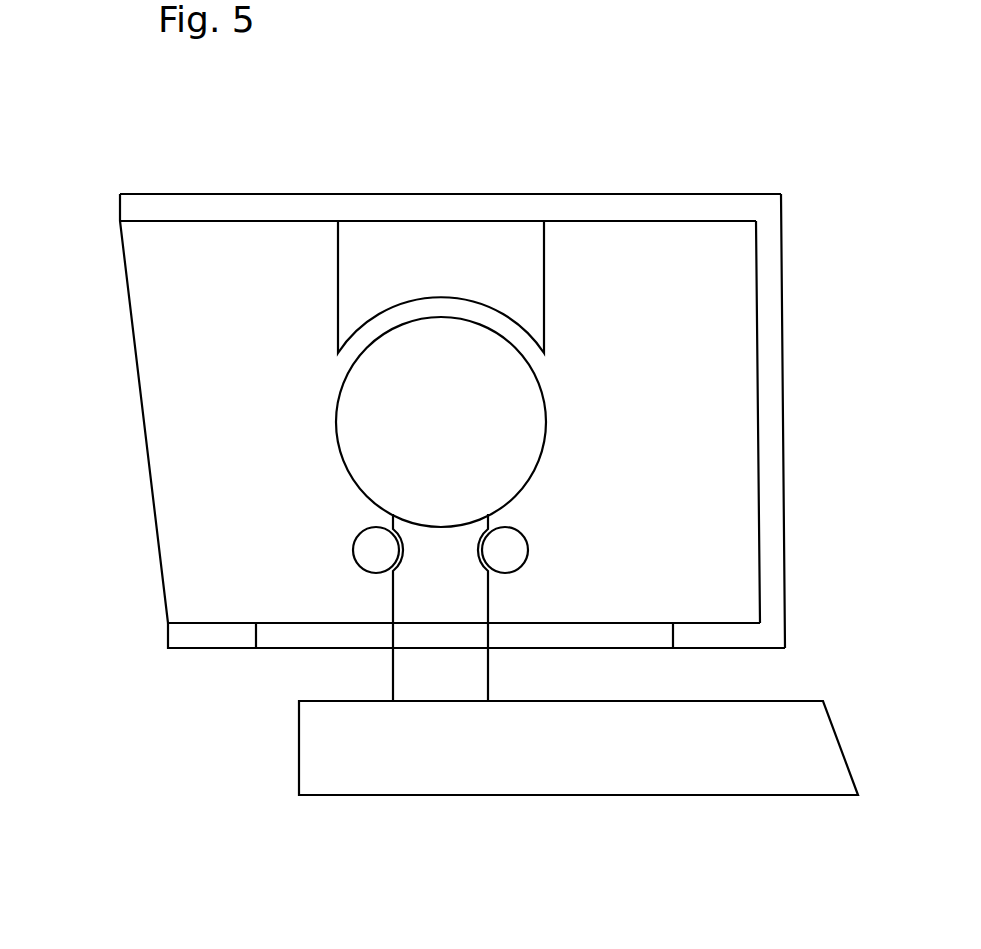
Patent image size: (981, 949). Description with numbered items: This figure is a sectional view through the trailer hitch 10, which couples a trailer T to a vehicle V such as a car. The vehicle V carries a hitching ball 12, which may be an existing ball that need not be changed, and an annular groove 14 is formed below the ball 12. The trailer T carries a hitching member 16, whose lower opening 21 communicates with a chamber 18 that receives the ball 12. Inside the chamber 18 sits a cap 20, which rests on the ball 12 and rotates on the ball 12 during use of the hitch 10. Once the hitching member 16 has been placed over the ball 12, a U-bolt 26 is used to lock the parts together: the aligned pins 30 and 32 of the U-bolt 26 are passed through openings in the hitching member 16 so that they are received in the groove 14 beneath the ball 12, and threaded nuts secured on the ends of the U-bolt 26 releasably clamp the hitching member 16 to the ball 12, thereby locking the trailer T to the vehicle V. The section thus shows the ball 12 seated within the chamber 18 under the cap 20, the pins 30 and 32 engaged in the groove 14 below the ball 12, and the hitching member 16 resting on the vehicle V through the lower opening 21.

The trailer hitch 10 is at (632, 137).
The hitching ball 12 is at (338, 428).
The annular groove 14 is at (402, 545).
The hitching member 16 is at (390, 194).
The chamber 18 is at (167, 429).
The cap 20 is at (483, 257).
The lower opening 21 is at (277, 650).
The U-bolt 26 is at (518, 528).
The pin 30 is at (522, 560).
The pin 32 is at (355, 557).
The trailer T is at (303, 194).
The vehicle V is at (580, 795).